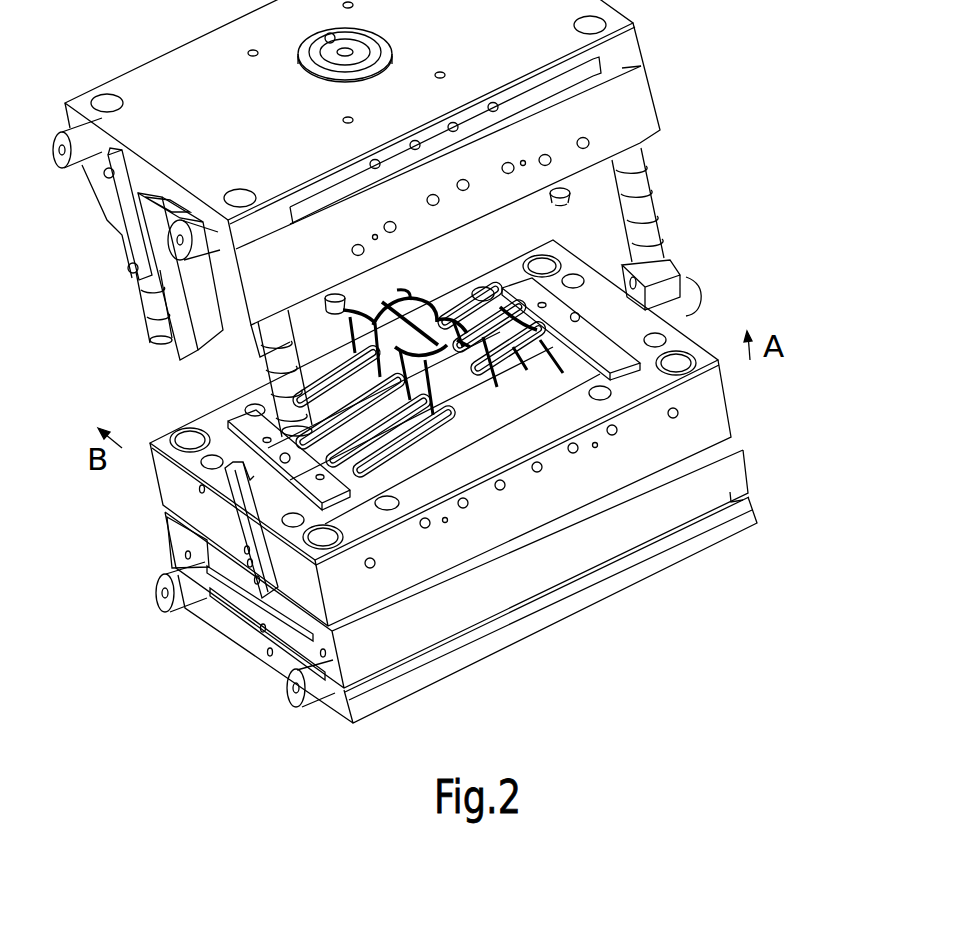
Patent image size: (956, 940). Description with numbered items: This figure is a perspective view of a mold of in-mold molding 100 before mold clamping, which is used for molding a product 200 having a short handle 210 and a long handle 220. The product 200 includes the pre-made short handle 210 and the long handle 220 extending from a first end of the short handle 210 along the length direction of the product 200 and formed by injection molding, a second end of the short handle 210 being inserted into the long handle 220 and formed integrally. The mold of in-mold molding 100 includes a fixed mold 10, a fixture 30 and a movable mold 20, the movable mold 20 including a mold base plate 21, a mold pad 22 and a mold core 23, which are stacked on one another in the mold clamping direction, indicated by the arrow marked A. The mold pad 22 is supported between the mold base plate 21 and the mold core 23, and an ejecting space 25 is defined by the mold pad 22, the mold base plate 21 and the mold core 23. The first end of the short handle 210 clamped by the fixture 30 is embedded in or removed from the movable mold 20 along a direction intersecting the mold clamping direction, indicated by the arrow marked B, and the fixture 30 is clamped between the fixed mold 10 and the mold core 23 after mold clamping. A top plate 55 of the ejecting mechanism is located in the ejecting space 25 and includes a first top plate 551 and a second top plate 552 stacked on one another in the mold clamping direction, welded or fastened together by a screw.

The fixed mold 10 is at (733, 263).
The mold of in-mold molding 100 is at (420, 218).
The movable mold 20 is at (464, 481).
The mold base plate 21 is at (747, 518).
The mold pad 22 is at (730, 460).
The mold core 23 is at (722, 413).
The ejecting space 25 is at (210, 549).
The fixture 30 is at (247, 425).
The top plate 55 is at (203, 639).
The first top plate 551 is at (270, 637).
The second top plate 552 is at (237, 600).
The product 200 is at (541, 482).
The short handle 210 is at (572, 348).
The long handle 220 is at (543, 377).